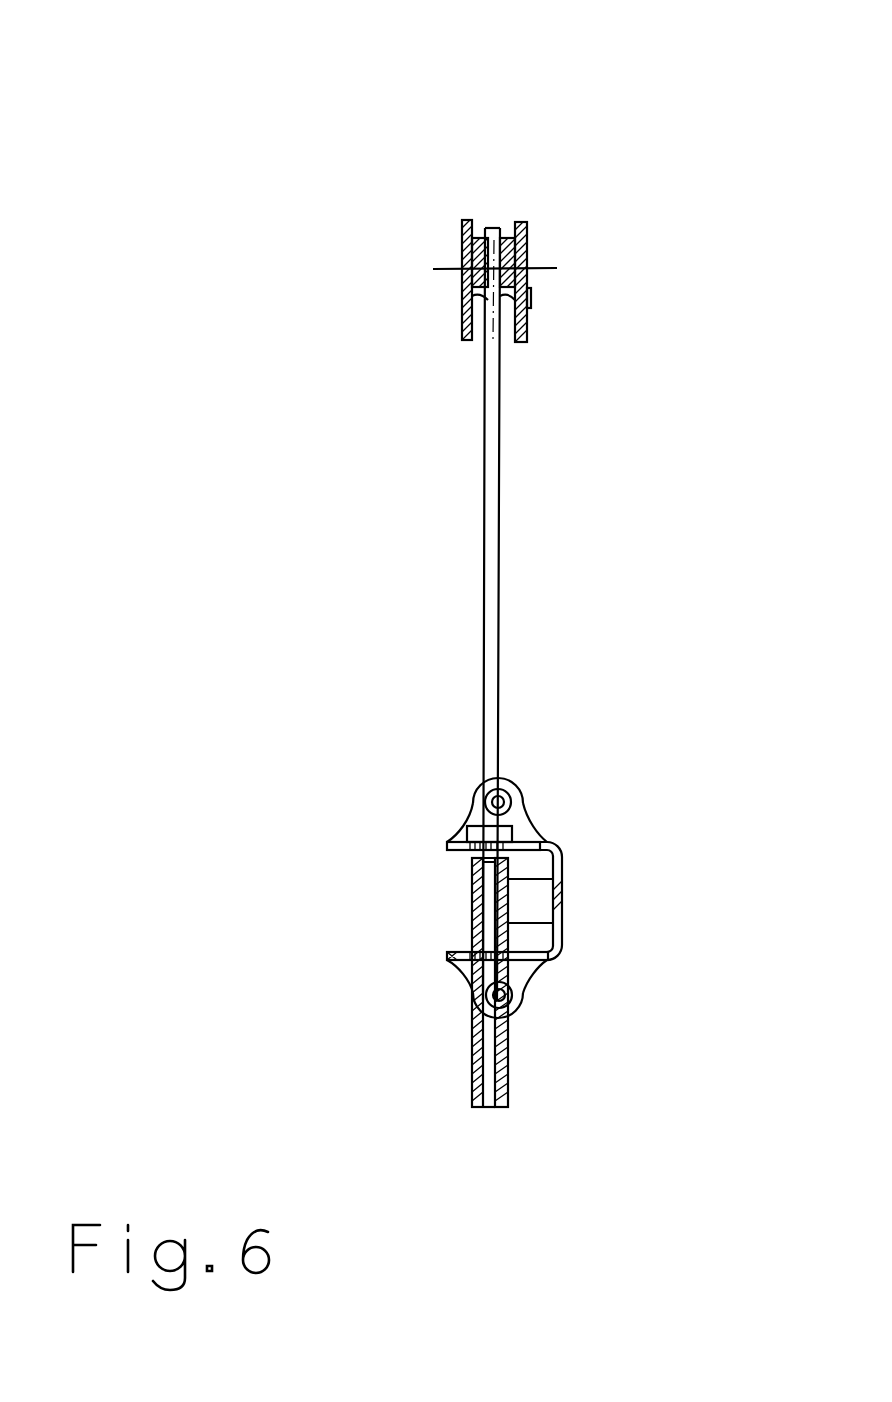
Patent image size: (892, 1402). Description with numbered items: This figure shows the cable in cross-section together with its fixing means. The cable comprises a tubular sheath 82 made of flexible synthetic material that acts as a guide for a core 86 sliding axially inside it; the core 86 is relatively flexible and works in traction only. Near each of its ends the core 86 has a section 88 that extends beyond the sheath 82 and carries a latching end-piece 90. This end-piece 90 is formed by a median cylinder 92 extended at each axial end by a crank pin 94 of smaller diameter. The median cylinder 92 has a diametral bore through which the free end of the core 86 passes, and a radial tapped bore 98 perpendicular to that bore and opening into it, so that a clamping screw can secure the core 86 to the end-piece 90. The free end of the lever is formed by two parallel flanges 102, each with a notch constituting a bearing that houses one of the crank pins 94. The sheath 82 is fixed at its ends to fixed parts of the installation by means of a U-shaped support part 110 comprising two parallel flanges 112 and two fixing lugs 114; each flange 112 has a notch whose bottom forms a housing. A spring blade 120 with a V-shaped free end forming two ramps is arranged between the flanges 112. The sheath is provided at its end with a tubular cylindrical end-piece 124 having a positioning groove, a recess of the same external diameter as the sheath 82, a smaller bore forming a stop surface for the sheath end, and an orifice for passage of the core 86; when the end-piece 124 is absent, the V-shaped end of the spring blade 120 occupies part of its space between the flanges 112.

The tubular sheath 82 is at (504, 1096).
The core 86 is at (486, 1110).
The section 88 is at (482, 492).
The latching end-piece 90 is at (512, 237).
The median cylinder 92 is at (523, 317).
The crank pin 94 is at (435, 270).
The radial tapped bore 98 is at (489, 228).
The parallel flanges 102 is at (470, 222).
The U-shaped support part 110 is at (527, 746).
The parallel flanges 112 is at (450, 843).
The fixing lugs 114 is at (523, 827).
The spring blade 120 is at (533, 905).
The tubular cylindrical end-piece 124 is at (465, 917).